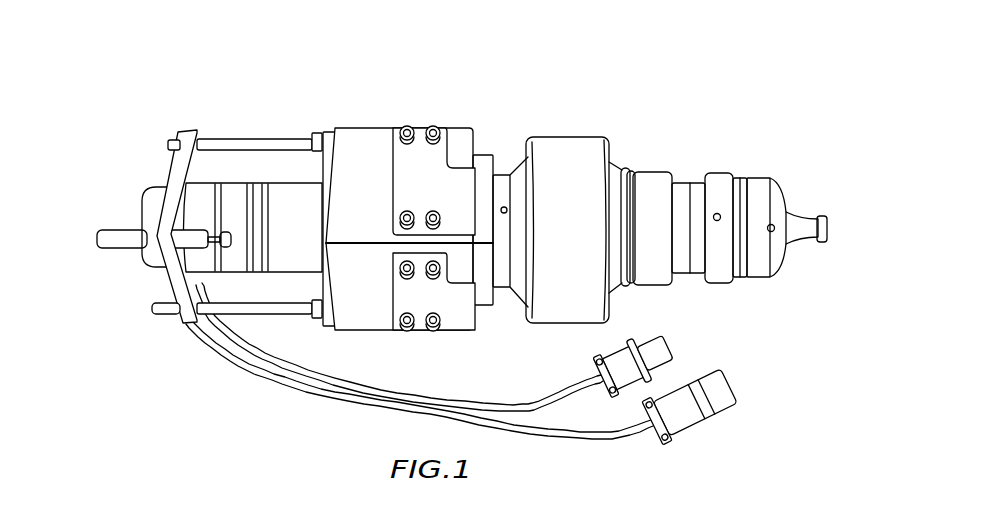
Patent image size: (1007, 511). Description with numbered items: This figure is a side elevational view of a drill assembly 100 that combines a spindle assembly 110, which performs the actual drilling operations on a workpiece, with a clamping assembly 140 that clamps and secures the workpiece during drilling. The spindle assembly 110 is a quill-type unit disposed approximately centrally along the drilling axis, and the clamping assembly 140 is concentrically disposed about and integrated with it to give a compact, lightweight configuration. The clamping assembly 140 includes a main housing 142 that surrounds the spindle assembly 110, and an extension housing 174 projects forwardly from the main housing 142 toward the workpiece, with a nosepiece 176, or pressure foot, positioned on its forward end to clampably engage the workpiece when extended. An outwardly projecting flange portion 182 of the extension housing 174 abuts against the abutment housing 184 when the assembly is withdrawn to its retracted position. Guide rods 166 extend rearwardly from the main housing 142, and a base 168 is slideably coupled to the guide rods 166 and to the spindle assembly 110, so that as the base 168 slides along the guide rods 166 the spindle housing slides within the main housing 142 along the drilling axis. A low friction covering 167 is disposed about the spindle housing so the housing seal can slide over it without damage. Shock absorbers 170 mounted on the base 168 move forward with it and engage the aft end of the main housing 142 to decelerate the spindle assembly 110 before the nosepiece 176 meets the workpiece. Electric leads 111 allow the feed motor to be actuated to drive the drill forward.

The drill assembly 100 is at (692, 48).
The spindle assembly 110 is at (145, 168).
The electric leads 111 is at (238, 332).
The clamping assembly 140 is at (275, 57).
The main housing 142 is at (381, 131).
The guide rods 166 is at (291, 140).
The covering 167 is at (283, 188).
The base 168 is at (186, 130).
The shock absorbers 170 is at (121, 250).
The extension housing 174 is at (688, 185).
The nosepiece 176 is at (826, 212).
The flange portion 182 is at (655, 172).
The abutment housing 184 is at (557, 147).